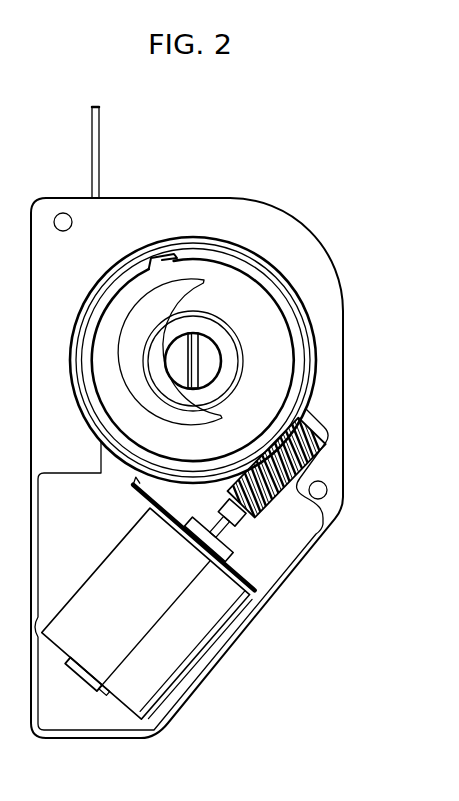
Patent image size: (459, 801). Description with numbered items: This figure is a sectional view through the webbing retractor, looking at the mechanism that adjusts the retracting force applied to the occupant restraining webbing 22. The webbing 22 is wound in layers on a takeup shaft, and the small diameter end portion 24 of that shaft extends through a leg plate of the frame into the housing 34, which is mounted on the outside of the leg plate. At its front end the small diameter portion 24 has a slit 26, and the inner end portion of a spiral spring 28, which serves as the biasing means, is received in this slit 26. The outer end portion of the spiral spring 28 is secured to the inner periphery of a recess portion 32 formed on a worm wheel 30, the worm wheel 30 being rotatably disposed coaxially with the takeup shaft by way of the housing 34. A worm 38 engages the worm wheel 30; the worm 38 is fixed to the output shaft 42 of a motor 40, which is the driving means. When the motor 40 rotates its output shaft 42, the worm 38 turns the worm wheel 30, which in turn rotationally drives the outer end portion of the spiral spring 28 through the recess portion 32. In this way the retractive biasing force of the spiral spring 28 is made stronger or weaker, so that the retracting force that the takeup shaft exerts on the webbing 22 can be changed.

The occupant restraining webbing 22 is at (100, 157).
The small diameter end portion 24 is at (212, 353).
The slit 26 is at (186, 340).
The spiral spring 28 is at (256, 292).
The worm wheel 30 is at (312, 381).
The recess portion 32 is at (121, 292).
The housing 34 is at (214, 200).
The worm 38 is at (320, 449).
The motor 40 is at (208, 630).
The output shaft 42 is at (217, 531).